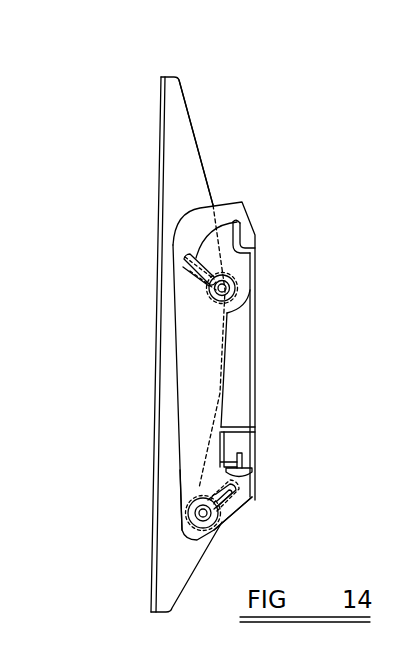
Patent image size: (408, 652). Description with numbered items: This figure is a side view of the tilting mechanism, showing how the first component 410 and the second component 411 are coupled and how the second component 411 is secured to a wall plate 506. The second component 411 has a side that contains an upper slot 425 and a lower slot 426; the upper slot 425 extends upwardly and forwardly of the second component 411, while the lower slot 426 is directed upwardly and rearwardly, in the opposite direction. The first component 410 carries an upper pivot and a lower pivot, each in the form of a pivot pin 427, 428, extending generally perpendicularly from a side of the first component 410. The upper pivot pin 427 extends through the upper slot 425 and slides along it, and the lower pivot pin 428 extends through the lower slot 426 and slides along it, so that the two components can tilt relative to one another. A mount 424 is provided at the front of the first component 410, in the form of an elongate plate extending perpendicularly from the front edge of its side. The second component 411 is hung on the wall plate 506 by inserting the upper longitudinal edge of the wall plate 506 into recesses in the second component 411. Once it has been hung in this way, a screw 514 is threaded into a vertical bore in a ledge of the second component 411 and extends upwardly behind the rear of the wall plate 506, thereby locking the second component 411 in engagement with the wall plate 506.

The first component 410 is at (180, 102).
The mount 424 is at (160, 93).
The second component 411 is at (214, 194).
The upper slot 425 is at (240, 237).
The pivot pin 427 is at (233, 283).
The wall plate 506 is at (257, 322).
The screw 514 is at (246, 457).
The lower slot 426 is at (247, 499).
The pivot pin 428 is at (226, 523).